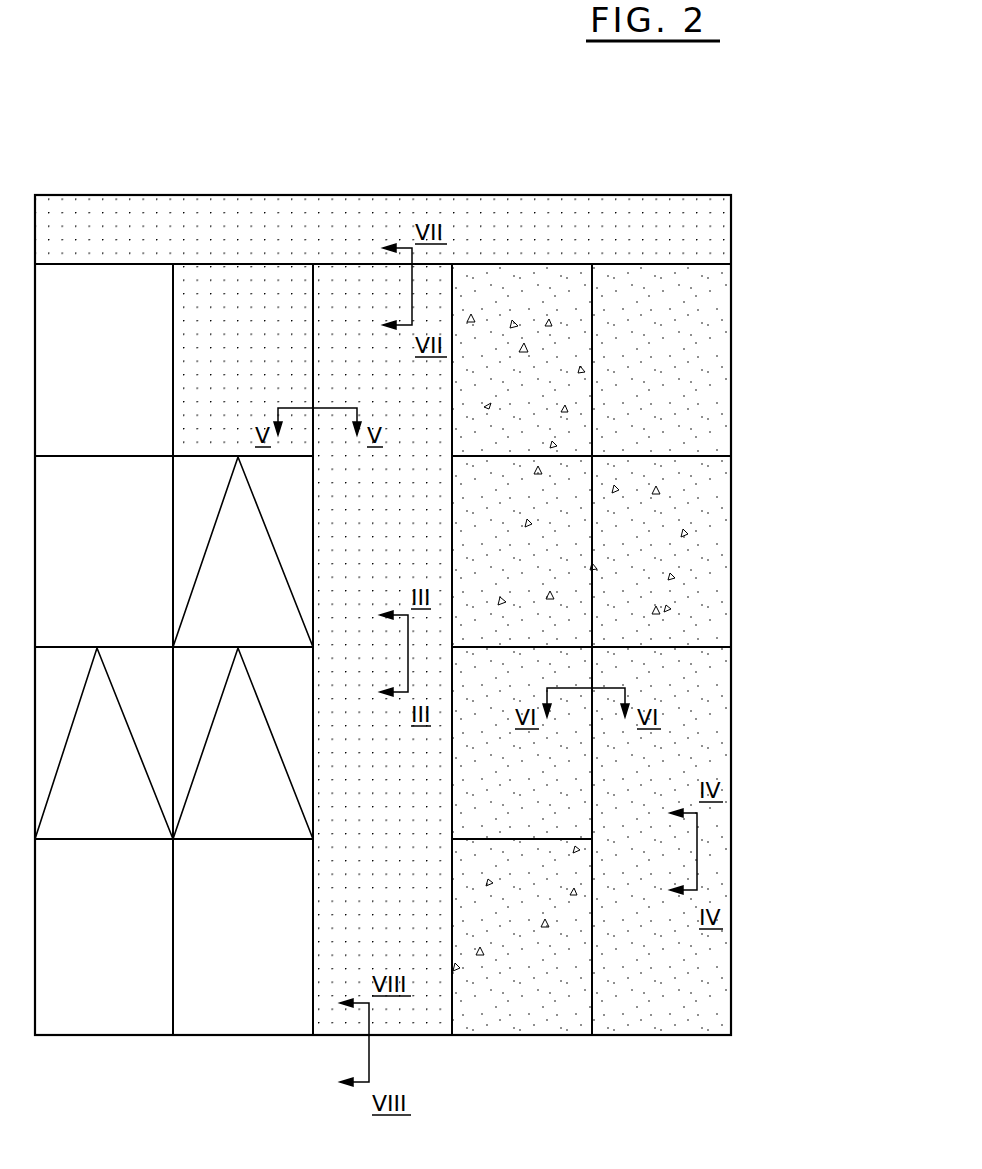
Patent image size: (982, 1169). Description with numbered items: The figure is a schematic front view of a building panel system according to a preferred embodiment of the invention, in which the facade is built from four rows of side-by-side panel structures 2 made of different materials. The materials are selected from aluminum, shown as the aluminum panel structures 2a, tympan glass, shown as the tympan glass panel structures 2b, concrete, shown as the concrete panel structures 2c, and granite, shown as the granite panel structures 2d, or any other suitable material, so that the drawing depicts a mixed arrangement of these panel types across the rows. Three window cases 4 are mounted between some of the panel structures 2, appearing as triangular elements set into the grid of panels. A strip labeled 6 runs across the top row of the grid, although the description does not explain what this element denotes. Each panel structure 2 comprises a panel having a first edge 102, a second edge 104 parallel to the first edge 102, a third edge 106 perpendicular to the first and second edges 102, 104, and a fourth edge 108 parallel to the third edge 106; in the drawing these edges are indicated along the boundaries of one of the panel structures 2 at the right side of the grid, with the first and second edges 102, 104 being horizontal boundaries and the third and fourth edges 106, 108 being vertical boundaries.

The panel structure 2 is at (527, 768).
The aluminum panel structure 2a is at (263, 389).
The tympan glass panel structure 2b is at (109, 388).
The concrete panel structure 2c is at (542, 391).
The granite panel structure 2d is at (676, 407).
The window case 4 is at (240, 569).
The edge strip 6 is at (152, 254).
The first edge 102 is at (693, 457).
The second edge 104 is at (713, 648).
The third edge 106 is at (593, 538).
The fourth edge 108 is at (732, 538).